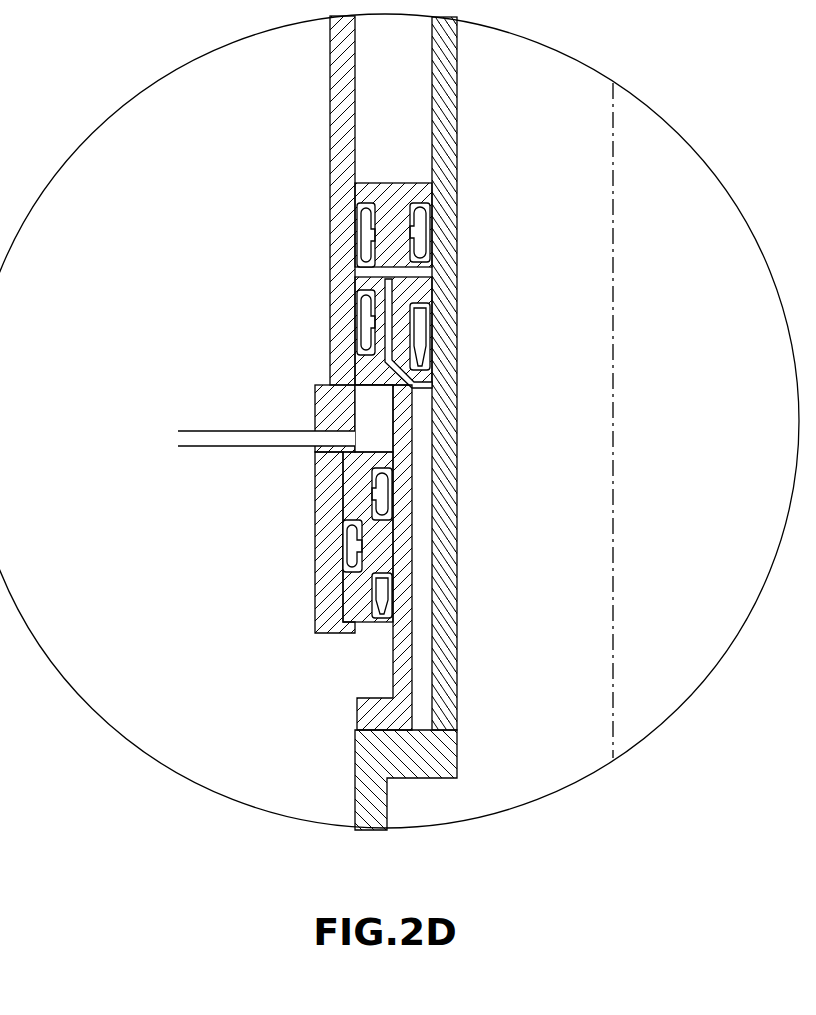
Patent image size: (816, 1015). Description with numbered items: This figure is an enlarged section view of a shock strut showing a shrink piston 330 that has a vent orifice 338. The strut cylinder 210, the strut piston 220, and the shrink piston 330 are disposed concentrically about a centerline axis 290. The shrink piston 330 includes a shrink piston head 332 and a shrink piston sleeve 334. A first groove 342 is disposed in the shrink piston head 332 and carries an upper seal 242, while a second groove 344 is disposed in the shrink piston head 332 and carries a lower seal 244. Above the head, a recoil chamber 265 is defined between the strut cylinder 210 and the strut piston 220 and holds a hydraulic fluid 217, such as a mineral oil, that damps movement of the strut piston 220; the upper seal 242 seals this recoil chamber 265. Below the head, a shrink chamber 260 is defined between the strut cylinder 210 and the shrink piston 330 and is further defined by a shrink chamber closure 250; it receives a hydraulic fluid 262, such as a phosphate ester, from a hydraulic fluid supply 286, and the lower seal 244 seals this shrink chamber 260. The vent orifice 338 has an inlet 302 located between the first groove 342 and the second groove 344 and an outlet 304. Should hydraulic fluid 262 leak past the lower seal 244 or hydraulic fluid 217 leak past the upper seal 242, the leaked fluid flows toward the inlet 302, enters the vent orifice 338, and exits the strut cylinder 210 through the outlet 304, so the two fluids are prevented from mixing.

The strut cylinder 210 is at (335, 63).
The hydraulic fluid 217 is at (407, 57).
The recoil chamber 265 is at (407, 105).
The strut piston 220 is at (453, 95).
The upper seal 242 is at (323, 196).
The first groove 342 is at (365, 238).
The shrink piston head 332 is at (397, 196).
The inlet 302 is at (365, 343).
The lower seal 244 is at (322, 322).
The second groove 344 is at (365, 328).
The vent orifice 338 is at (390, 290).
The outlet 304 is at (417, 390).
The hydraulic fluid 262 is at (372, 410).
The shrink chamber 260 is at (325, 406).
The hydraulic fluid supply 286 is at (236, 440).
The shrink chamber closure 250 is at (363, 593).
The shrink piston 330 is at (405, 552).
The shrink piston sleeve 334 is at (395, 652).
The centerline axis 290 is at (613, 390).